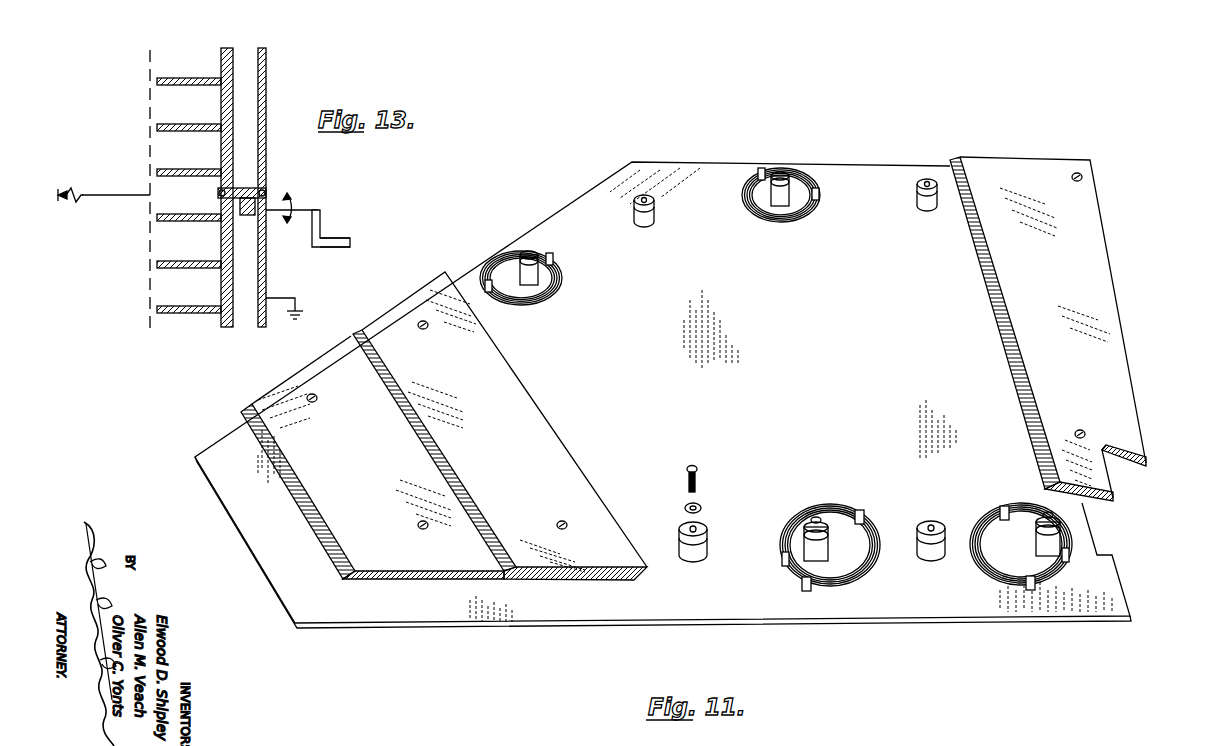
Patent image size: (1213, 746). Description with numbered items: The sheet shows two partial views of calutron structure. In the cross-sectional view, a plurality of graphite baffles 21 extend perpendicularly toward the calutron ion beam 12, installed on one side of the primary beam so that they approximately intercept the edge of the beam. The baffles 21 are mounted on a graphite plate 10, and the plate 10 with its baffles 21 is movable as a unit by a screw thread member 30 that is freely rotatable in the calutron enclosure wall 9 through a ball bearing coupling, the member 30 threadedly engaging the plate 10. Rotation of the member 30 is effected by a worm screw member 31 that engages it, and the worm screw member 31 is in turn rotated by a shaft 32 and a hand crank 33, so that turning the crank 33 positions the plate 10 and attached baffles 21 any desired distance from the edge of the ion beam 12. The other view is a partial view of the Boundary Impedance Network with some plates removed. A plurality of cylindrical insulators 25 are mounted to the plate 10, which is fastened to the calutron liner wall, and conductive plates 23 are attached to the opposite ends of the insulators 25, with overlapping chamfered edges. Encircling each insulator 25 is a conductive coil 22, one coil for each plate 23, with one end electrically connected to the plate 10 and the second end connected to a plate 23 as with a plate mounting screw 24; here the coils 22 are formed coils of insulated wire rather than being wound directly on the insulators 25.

In FIG. 13, the calutron enclosure wall 9 is at (258, 49).
In FIG. 13, the plate 10 is at (221, 54).
In FIG. 11, the plate 10 is at (708, 163).
In FIG. 13, the ion beam 12 is at (121, 246).
In FIG. 13, the baffles 21 is at (221, 86).
In FIG. 11, the conductive coil 22 is at (545, 303).
In FIG. 11, the conductive plates 23 is at (340, 358).
In FIG. 11, the plate mounting screw 24 is at (525, 256).
In FIG. 11, the cylindrical insulators 25 is at (915, 196).
In FIG. 13, the screw thread member 30 is at (242, 188).
In FIG. 13, the worm screw member 31 is at (246, 216).
In FIG. 13, the shaft 32 is at (318, 210).
In FIG. 13, the hand crank 33 is at (322, 247).